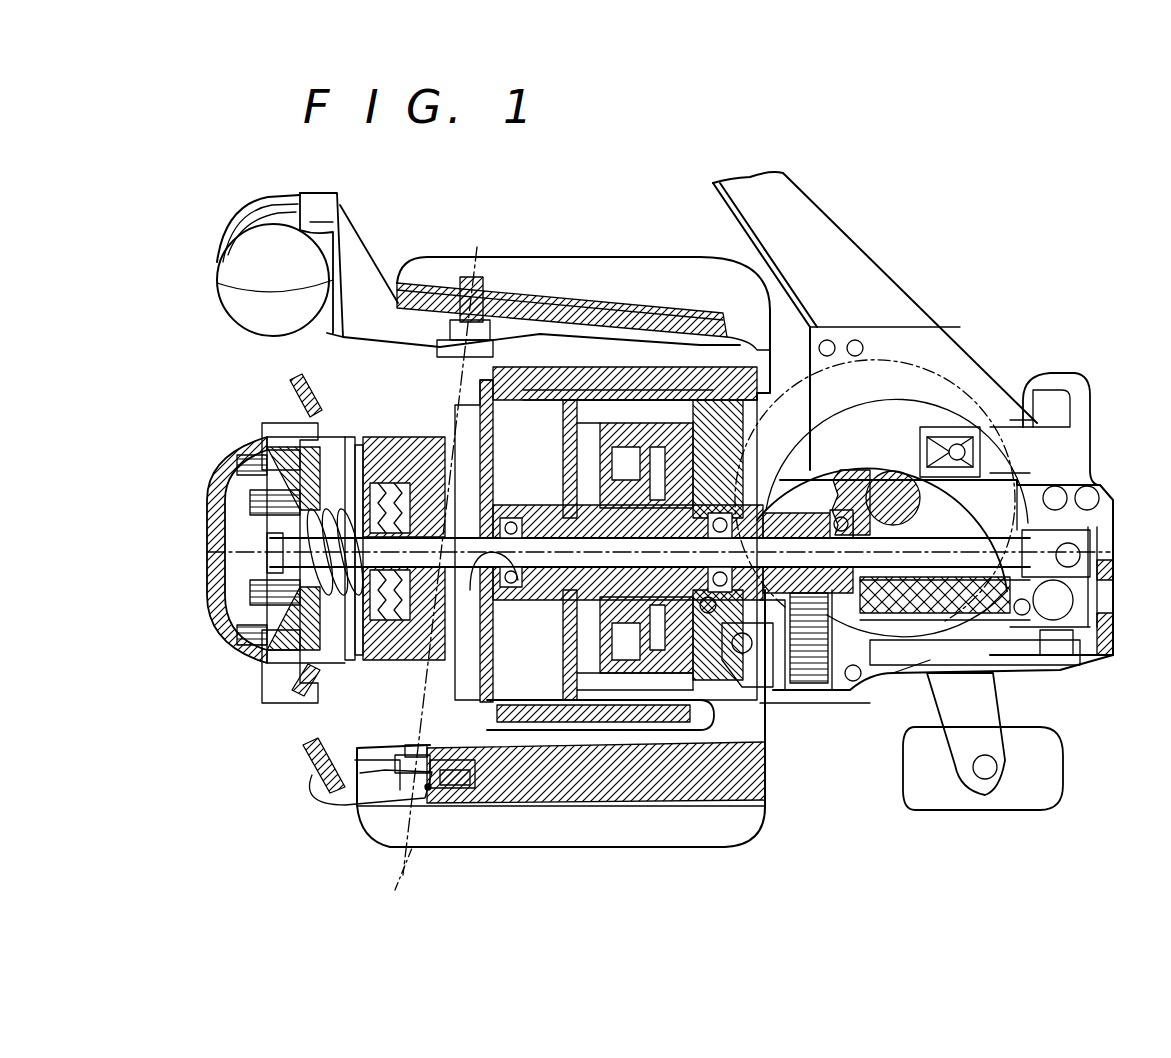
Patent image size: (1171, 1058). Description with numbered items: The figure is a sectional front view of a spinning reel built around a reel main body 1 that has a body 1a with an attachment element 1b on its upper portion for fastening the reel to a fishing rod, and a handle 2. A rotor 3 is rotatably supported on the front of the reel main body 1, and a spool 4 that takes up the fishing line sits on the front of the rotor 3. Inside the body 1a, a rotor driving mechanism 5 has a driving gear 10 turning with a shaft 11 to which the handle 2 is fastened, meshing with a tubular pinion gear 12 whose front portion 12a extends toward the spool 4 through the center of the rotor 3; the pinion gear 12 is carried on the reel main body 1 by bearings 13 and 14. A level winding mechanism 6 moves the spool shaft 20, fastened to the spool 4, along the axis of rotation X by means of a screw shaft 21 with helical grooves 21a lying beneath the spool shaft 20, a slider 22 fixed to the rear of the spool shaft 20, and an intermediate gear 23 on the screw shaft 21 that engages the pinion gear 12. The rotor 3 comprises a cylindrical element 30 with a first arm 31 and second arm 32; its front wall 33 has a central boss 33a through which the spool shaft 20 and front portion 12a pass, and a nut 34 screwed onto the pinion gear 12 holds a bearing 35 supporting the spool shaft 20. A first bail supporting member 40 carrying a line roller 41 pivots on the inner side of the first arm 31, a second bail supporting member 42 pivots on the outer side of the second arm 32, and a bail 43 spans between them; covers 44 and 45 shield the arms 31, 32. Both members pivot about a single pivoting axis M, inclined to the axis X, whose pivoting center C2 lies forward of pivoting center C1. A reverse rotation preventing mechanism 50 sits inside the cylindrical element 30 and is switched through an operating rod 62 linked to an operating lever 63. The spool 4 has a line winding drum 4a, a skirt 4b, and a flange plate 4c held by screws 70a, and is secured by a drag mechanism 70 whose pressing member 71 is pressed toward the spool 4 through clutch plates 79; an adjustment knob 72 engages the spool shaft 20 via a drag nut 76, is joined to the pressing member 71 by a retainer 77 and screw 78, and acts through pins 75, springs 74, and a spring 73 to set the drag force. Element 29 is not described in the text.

The reel main body 1 is at (1115, 474).
The body 1a is at (1100, 557).
The attachment element 1b is at (830, 250).
The handle 2 is at (1067, 750).
The rotor 3 is at (770, 755).
The spool 4 is at (482, 405).
The line winding drum 4a is at (440, 478).
The skirt 4b is at (553, 367).
The flange plate 4c is at (300, 392).
The rotor driving mechanism 5 is at (935, 362).
The level winding mechanism 6 is at (925, 652).
The driving gear 10 is at (975, 393).
The shaft 11 is at (910, 505).
The pinion gear 12 is at (767, 525).
The front portion of pinion gear 12a is at (587, 690).
The bearing 13 is at (715, 607).
The bearing 14 is at (828, 566).
The spool shaft 20 is at (413, 560).
The screw shaft 21 is at (963, 607).
The helical grooves 21a is at (997, 613).
The slider 22 is at (1080, 535).
The intermediate gear 23 is at (800, 688).
The slider 29 is at (947, 640).
The cylindrical element 30 is at (683, 705).
The first arm 31 is at (422, 295).
The second arm 32 is at (675, 790).
The front wall 33 is at (575, 655).
The boss 33a is at (600, 500).
The nut 34 is at (530, 590).
The bearing 35 is at (470, 590).
The first bail supporting member 40 is at (384, 328).
The line roller 41 is at (236, 233).
The second bail supporting member 42 is at (355, 792).
The bail 43 is at (217, 283).
The cover 44 is at (648, 273).
The cover 45 is at (718, 822).
The reverse rotation preventing mechanism 50 is at (618, 688).
The operating rod 62 is at (836, 437).
The operating lever 63 is at (1068, 380).
The drag mechanism 70 is at (210, 584).
The screws 70a is at (300, 652).
The pressing member 71 is at (352, 600).
The adjustment knob 72 is at (235, 505).
The spring 73 is at (347, 523).
The springs 74 is at (290, 510).
The pins 75 is at (265, 535).
The drag nut 76 is at (265, 538).
The retainer 77 is at (280, 422).
The screw 78 is at (247, 460).
The clutch plates 79 is at (383, 600).
The pivoting center C1 is at (470, 318).
The pivoting center C2 is at (433, 795).
The pivoting axis M is at (388, 878).
The axis of rotation X is at (644, 554).